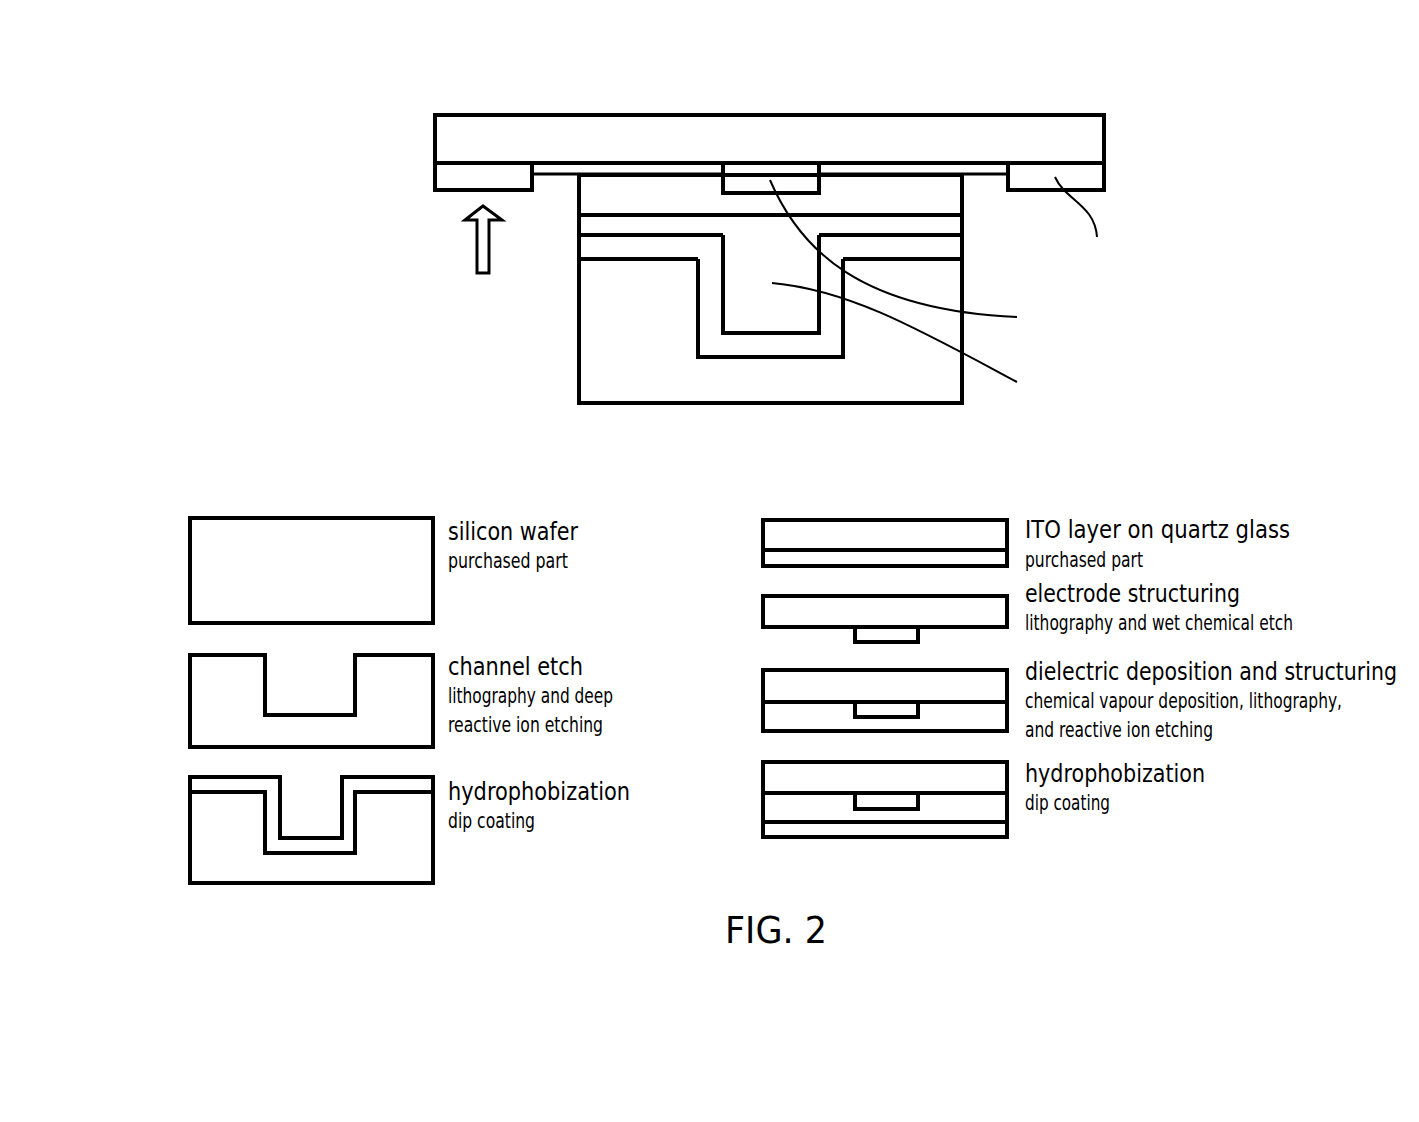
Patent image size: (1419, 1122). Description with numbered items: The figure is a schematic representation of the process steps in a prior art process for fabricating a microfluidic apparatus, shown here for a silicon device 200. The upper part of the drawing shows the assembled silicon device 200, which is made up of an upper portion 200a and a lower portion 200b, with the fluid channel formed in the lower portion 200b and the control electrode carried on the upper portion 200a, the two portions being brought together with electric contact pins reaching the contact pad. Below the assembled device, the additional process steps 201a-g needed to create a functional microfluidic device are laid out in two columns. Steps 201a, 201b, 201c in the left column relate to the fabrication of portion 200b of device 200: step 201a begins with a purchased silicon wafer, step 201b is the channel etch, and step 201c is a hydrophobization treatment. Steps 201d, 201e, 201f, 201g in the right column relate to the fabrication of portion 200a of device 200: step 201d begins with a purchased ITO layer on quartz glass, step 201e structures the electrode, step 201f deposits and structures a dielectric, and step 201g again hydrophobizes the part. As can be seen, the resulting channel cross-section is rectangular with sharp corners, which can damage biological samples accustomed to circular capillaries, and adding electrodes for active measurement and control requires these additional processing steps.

The silicon device 200 is at (793, 251).
The portion of device 200a is at (395, 113).
The portion of device 200b is at (395, 213).
The process step 201a is at (270, 570).
The process step 201b is at (270, 701).
The process step 201c is at (270, 830).
The process step 201d is at (843, 543).
The process step 201e is at (843, 618).
The process step 201f is at (847, 700).
The process step 201g is at (843, 799).